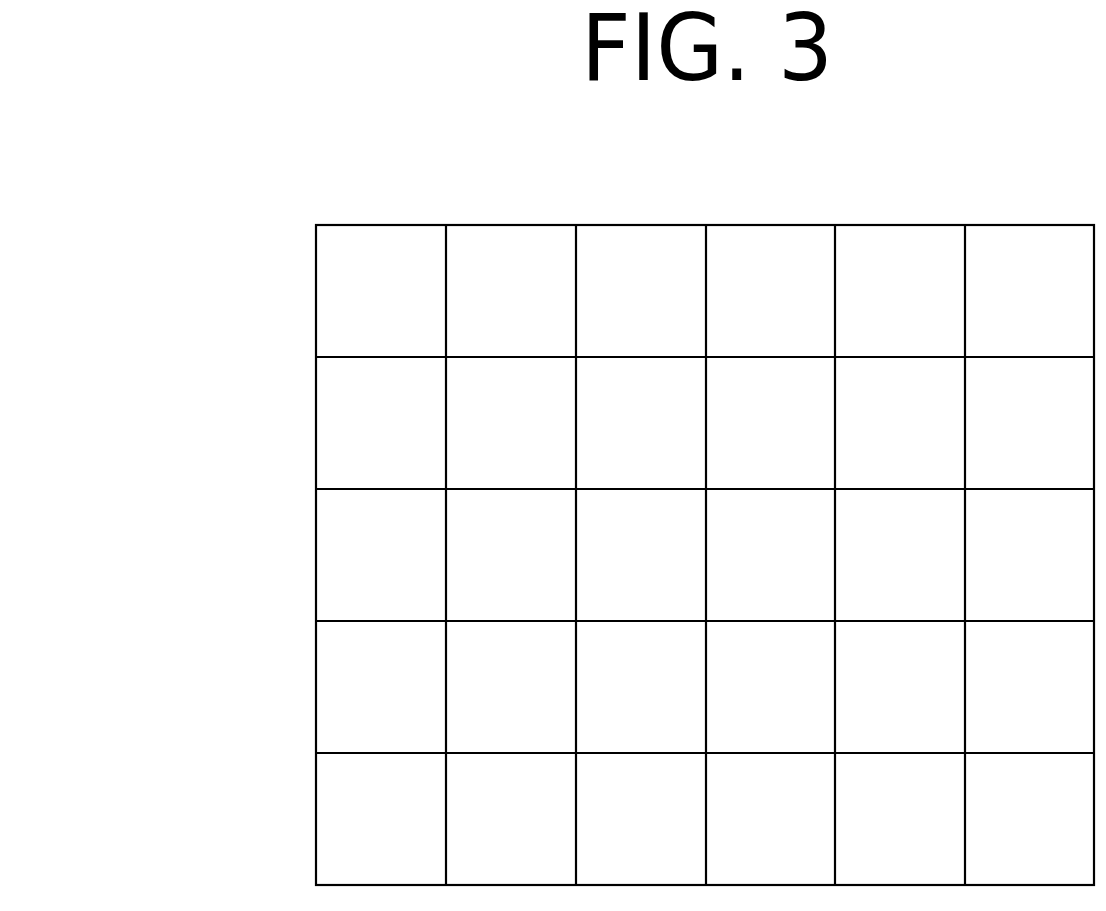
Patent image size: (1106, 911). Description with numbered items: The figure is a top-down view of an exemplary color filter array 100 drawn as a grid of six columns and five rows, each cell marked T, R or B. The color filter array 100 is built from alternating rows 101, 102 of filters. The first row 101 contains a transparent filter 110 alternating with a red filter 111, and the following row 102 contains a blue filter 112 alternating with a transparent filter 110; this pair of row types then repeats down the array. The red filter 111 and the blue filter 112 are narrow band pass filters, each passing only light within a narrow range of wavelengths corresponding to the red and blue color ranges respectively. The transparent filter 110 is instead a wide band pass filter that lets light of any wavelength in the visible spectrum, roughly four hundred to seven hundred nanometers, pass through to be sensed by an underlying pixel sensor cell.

The color filter array 100 is at (190, 172).
The row 101 is at (314, 293).
The row 102 is at (314, 412).
The transparent filter 110 is at (407, 292).
The red color filter 111 is at (526, 249).
The blue color filter 112 is at (603, 396).